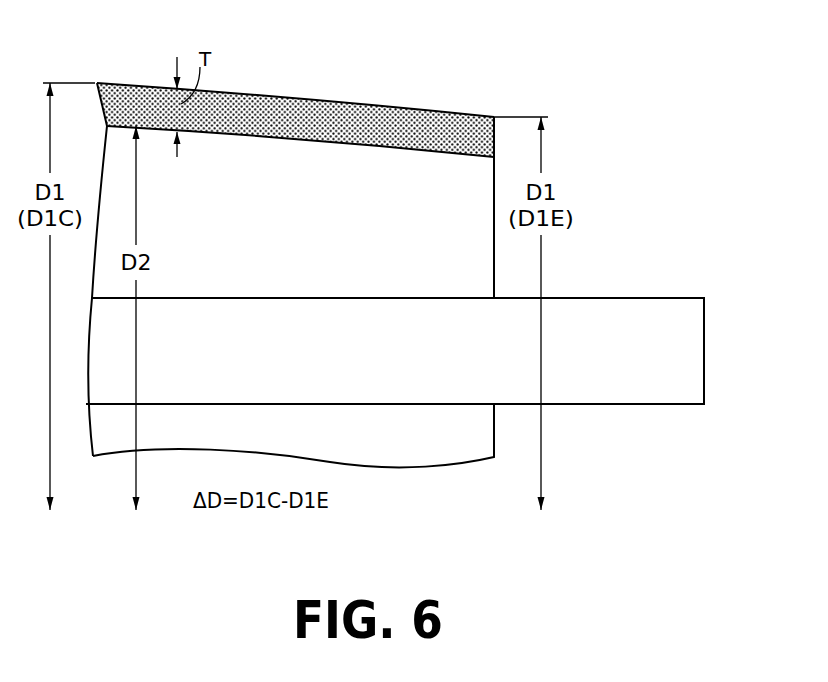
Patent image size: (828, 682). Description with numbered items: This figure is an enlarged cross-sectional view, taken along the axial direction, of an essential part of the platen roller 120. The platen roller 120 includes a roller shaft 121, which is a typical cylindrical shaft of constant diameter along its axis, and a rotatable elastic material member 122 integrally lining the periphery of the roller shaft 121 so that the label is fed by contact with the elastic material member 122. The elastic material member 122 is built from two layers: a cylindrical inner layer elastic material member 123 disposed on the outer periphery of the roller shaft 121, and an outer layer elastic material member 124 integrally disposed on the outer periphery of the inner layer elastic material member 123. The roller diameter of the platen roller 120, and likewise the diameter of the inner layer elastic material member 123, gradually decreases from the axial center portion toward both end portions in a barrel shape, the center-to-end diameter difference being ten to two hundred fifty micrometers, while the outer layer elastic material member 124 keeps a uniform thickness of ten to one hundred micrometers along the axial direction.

The platen roller 120 is at (395, 236).
The roller shaft 121 is at (594, 395).
The elastic material member 122 is at (295, 87).
The inner layer elastic material member 123 is at (410, 168).
The outer layer elastic material member 124 is at (360, 113).